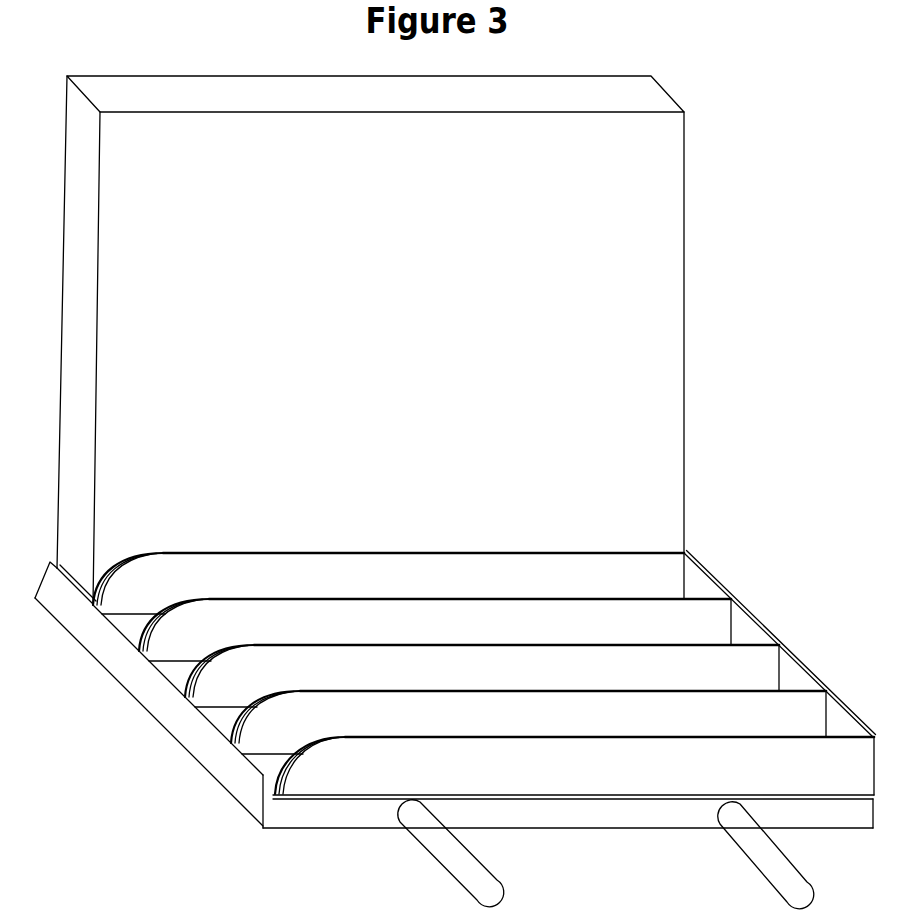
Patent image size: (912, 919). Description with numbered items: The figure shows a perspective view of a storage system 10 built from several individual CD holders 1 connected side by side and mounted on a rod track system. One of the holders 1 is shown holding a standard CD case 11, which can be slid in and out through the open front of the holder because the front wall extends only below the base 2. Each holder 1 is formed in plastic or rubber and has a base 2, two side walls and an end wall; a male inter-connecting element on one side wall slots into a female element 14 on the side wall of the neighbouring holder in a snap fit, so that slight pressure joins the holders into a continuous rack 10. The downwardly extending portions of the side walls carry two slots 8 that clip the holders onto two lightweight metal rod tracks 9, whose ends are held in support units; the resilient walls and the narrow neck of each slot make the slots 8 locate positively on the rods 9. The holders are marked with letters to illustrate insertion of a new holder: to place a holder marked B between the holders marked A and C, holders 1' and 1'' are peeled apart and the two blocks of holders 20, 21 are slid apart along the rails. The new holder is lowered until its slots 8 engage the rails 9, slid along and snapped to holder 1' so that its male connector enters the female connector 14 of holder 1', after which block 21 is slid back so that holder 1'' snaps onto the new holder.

The storage system 10 is at (780, 586).
The CD case 11 is at (622, 324).
The CD holder 1 is at (530, 699).
The holder 1' is at (412, 557).
The holder 1'' is at (466, 605).
The base 2 is at (263, 828).
The slots 8 is at (398, 819).
The rod tracks 9 is at (737, 869).
The female element 14 is at (862, 795).
The block of holders 20 is at (52, 620).
The block of holders 21 is at (152, 714).